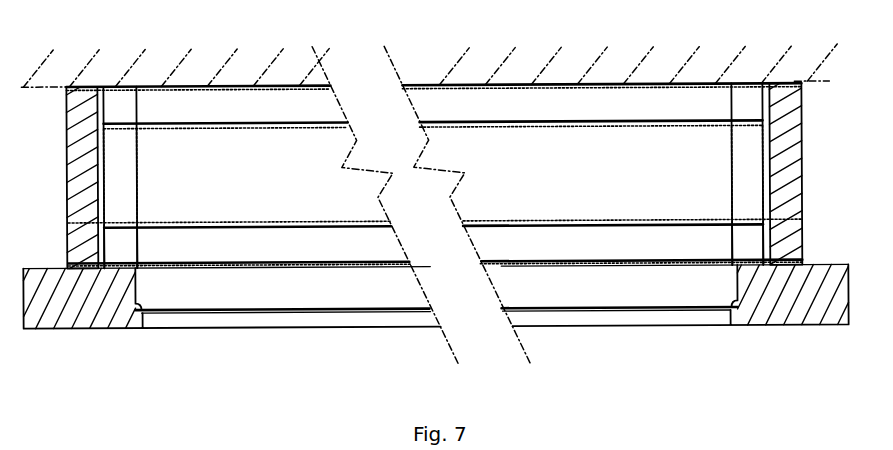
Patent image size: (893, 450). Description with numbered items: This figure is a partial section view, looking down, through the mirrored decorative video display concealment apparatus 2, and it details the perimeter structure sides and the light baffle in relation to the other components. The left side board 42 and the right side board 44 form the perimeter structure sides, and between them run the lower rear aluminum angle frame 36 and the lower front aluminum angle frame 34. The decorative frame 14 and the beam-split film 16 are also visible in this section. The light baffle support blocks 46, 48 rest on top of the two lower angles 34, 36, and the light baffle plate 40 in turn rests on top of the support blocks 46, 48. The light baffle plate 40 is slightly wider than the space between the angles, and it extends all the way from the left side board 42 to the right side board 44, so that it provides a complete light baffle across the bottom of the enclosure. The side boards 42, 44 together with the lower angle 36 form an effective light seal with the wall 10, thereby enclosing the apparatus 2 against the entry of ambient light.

The mirrored decorative video display concealment apparatus 2 is at (310, 387).
The wall 10 is at (55, 82).
The decorative frame 14 is at (799, 327).
The beam-split film 16 is at (605, 312).
The lower front aluminum angle frame 34 is at (610, 267).
The lower rear aluminum angle frame 36 is at (611, 84).
The light baffle plate 40 is at (628, 227).
The left side board 42 is at (67, 182).
The right side board 44 is at (802, 104).
The light baffle support block 46 is at (138, 251).
The light baffle support block 48 is at (731, 250).